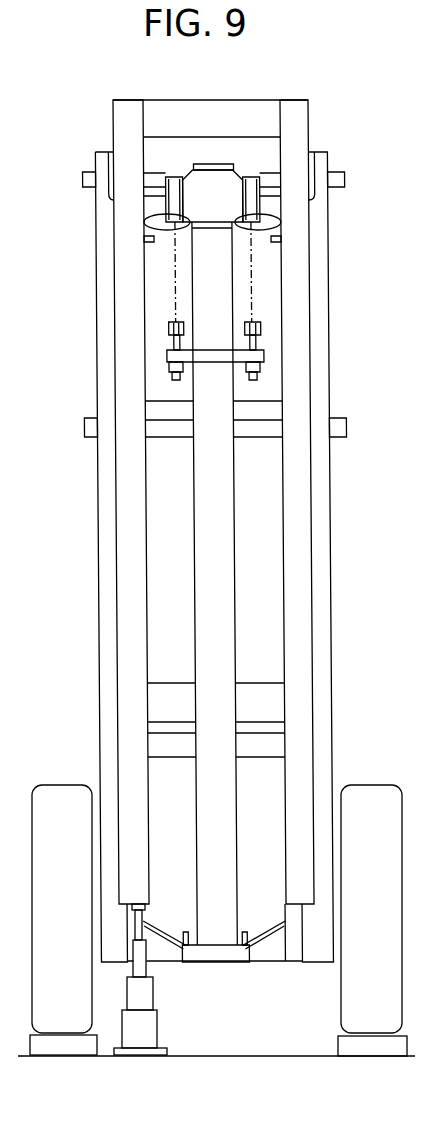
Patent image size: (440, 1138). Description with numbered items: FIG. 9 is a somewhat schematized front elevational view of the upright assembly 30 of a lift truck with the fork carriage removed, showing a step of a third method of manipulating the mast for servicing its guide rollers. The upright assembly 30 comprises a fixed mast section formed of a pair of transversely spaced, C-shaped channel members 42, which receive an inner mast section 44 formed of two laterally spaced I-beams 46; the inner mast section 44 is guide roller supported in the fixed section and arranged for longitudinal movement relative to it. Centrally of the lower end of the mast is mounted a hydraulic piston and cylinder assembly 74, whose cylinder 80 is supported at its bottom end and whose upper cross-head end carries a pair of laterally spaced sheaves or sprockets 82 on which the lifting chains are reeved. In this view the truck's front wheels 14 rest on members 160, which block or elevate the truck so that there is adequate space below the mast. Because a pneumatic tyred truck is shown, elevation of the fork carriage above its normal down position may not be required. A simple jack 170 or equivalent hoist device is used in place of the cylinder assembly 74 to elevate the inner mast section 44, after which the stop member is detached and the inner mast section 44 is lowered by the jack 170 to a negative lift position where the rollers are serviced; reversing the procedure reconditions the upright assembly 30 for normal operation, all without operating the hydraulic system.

The front wheels 14 is at (367, 795).
The upright assembly 30 is at (335, 520).
The channel members 42 is at (315, 358).
The inner mast section 44 is at (148, 614).
The I-beams 46 is at (293, 326).
The hydraulic piston and cylinder assembly 74 is at (232, 586).
The cylinder 80 is at (217, 495).
The sheaves or sprockets 82 is at (250, 198).
The ramp members 160 is at (78, 1048).
The jack 170 is at (152, 1025).